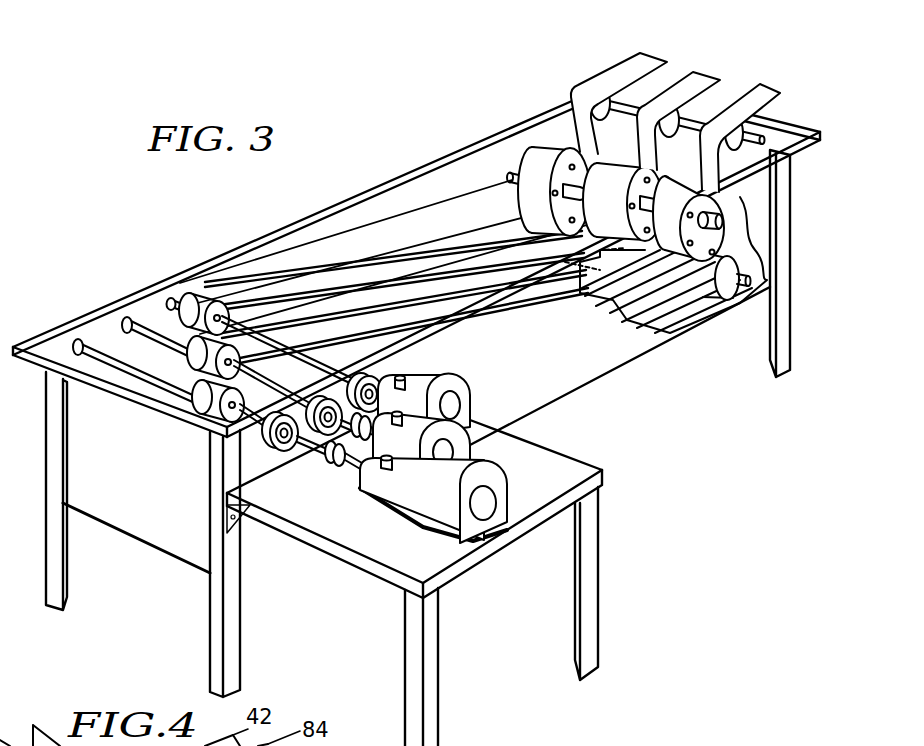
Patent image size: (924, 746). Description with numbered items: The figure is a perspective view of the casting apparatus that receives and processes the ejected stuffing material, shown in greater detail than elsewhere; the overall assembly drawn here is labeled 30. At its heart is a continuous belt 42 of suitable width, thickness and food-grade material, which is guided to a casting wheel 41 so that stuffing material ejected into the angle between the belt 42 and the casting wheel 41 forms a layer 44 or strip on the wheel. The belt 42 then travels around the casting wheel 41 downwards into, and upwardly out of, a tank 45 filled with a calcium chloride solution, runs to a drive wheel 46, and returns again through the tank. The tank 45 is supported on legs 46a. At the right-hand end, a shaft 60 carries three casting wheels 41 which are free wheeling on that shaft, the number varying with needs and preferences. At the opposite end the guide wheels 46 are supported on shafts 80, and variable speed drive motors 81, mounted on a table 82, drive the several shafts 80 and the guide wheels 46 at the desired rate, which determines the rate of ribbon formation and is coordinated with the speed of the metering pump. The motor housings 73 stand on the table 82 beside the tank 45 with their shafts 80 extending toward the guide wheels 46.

The apparatus frame table 30 is at (377, 168).
The casting wheel 41 is at (522, 153).
The continuous belt 42 is at (307, 276).
The layer 44 is at (757, 92).
The tank 45 is at (532, 351).
The drive wheel 46 is at (184, 298).
The legs 46a is at (240, 657).
The shaft 60 is at (722, 220).
The motor 73 is at (471, 414).
The shafts 80 is at (300, 352).
The variable speed drive motors 81 is at (512, 484).
The table 82 is at (393, 545).